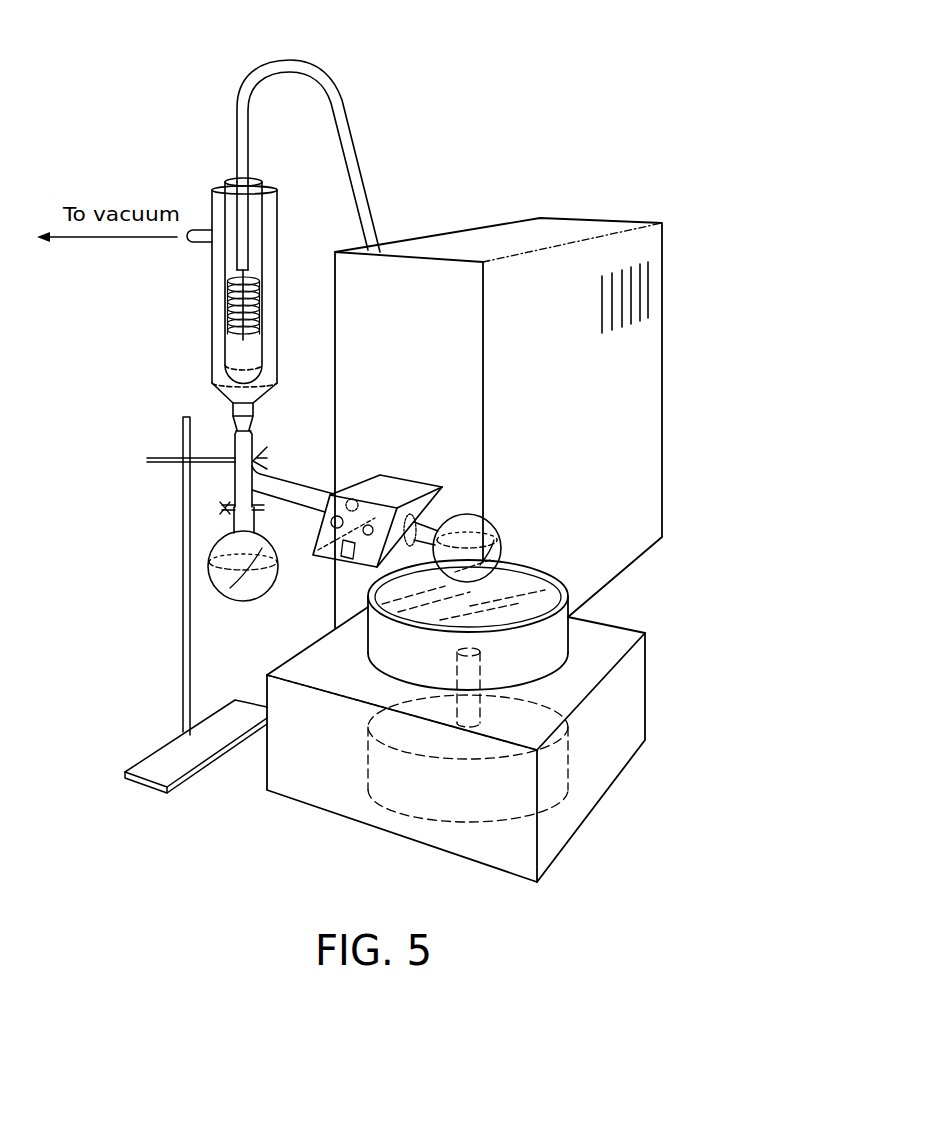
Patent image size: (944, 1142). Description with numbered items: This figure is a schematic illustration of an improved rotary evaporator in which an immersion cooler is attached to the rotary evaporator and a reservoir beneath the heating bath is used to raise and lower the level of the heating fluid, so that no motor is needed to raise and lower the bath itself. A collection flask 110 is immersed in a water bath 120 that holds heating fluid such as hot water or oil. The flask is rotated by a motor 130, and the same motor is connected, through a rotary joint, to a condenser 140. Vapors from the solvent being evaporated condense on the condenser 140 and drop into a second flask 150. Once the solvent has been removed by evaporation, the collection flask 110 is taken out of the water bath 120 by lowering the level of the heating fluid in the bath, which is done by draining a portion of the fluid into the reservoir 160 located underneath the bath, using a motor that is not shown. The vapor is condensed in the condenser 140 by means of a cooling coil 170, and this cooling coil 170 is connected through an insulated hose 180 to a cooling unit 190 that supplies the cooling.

The collection flask 110 is at (487, 530).
The water bath 120 is at (592, 641).
The motor 130 is at (400, 492).
The condenser 140 is at (178, 350).
The second flask 150 is at (220, 587).
The reservoir 160 is at (415, 796).
The cooling coil 170 is at (237, 308).
The insulated hose 180 is at (262, 70).
The cooling unit 190 is at (690, 291).